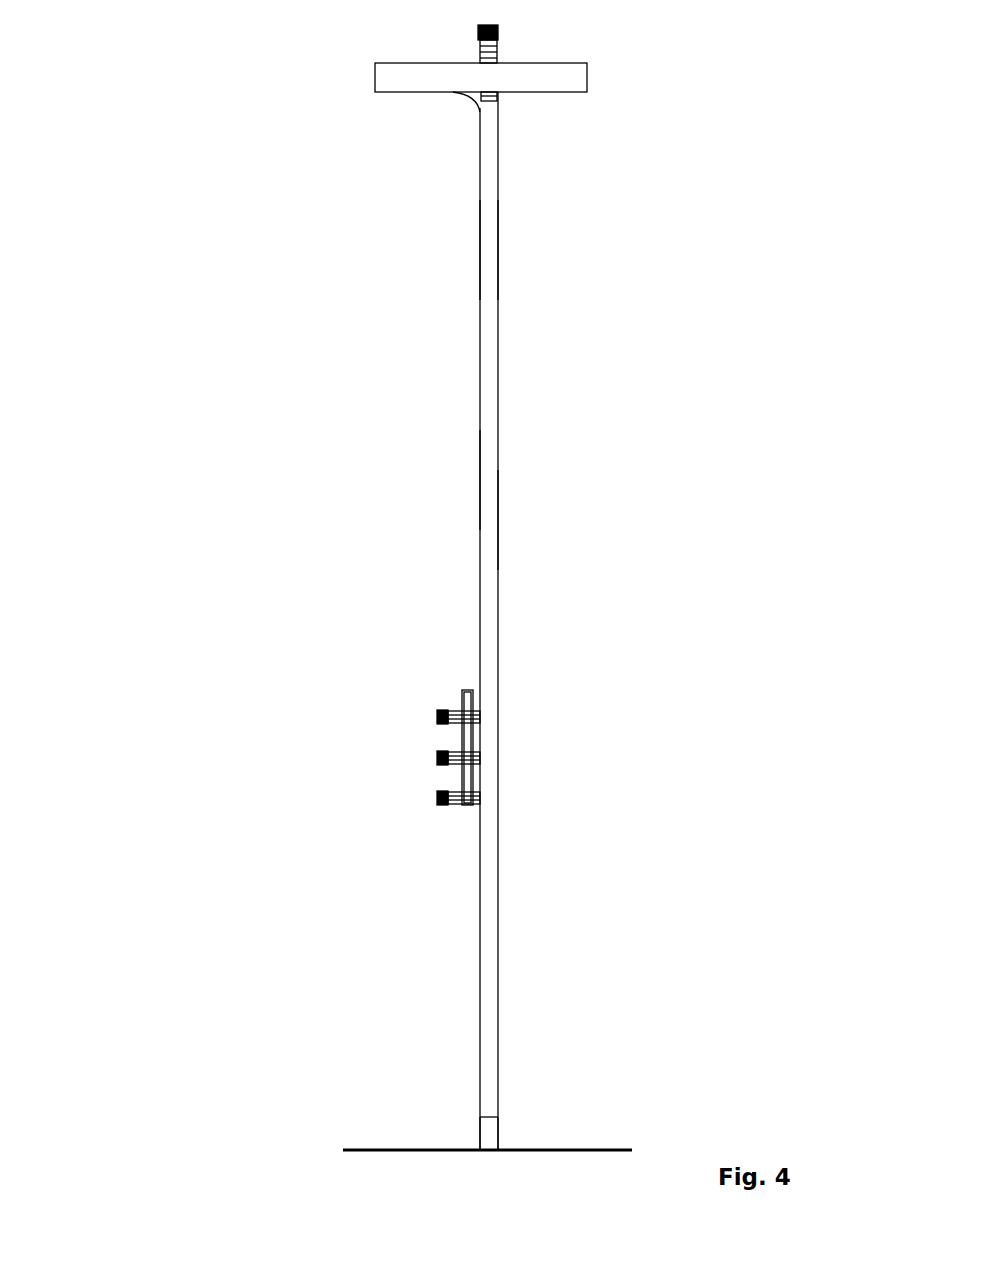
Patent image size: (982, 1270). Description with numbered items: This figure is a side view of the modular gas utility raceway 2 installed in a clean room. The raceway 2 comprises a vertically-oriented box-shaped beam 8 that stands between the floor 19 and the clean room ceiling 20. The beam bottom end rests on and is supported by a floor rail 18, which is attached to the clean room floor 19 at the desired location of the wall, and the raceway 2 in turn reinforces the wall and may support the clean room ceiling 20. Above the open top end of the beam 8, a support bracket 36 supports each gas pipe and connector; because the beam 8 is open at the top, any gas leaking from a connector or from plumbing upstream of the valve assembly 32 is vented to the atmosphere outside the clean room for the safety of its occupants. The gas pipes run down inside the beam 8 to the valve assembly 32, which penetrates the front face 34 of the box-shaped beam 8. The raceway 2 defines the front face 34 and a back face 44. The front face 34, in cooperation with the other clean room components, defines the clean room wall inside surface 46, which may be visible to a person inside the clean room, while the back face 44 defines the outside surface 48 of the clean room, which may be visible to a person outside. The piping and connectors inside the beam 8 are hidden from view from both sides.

The modular gas utility raceway 2 is at (185, 346).
The box-shaped beam 8 is at (489, 376).
The floor rail 18 is at (488, 1130).
The floor 19 is at (387, 1150).
The clean room ceiling 20 is at (380, 72).
The valve assembly 32 is at (437, 717).
The front face 34 is at (480, 475).
The support bracket 36 is at (500, 43).
The back face 44 is at (498, 521).
The clean room wall inside surface 46 is at (480, 250).
The outside surface 48 is at (498, 258).